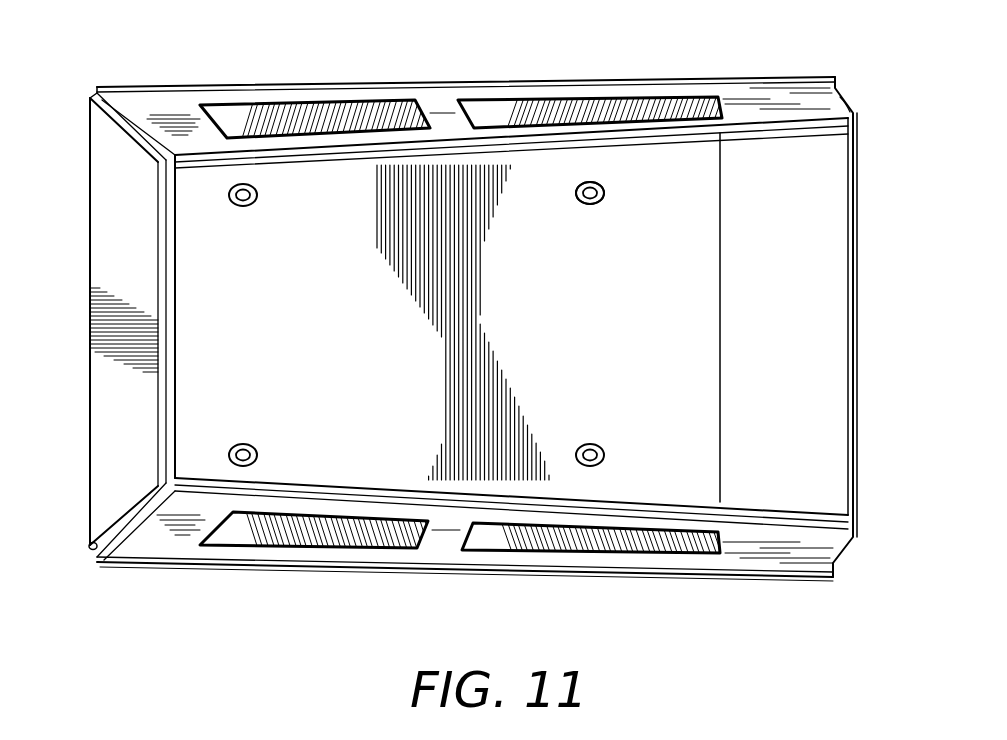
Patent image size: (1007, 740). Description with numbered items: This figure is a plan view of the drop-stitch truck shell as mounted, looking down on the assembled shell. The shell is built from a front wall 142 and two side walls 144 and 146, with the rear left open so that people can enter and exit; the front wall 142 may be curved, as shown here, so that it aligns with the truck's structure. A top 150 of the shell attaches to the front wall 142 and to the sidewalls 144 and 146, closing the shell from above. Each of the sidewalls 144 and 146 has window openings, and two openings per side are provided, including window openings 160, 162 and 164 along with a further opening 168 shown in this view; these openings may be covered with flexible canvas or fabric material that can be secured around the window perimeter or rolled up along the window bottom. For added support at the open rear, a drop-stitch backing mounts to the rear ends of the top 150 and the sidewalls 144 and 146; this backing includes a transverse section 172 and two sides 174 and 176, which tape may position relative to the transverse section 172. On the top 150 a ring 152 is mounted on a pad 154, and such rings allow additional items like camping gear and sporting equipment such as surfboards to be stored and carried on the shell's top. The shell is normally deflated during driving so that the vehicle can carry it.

The front wall 142 is at (797, 383).
The side wall 144 is at (173, 532).
The side wall 146 is at (174, 118).
The top 150 is at (692, 172).
The ring 152 is at (589, 186).
The pad 154 is at (603, 192).
The window opening 160 is at (615, 540).
The window opening 162 is at (283, 535).
The window opening 164 is at (521, 115).
The top vent slot 168 is at (325, 117).
The transverse section 172 is at (157, 245).
The side 174 is at (88, 112).
The side 176 is at (93, 550).